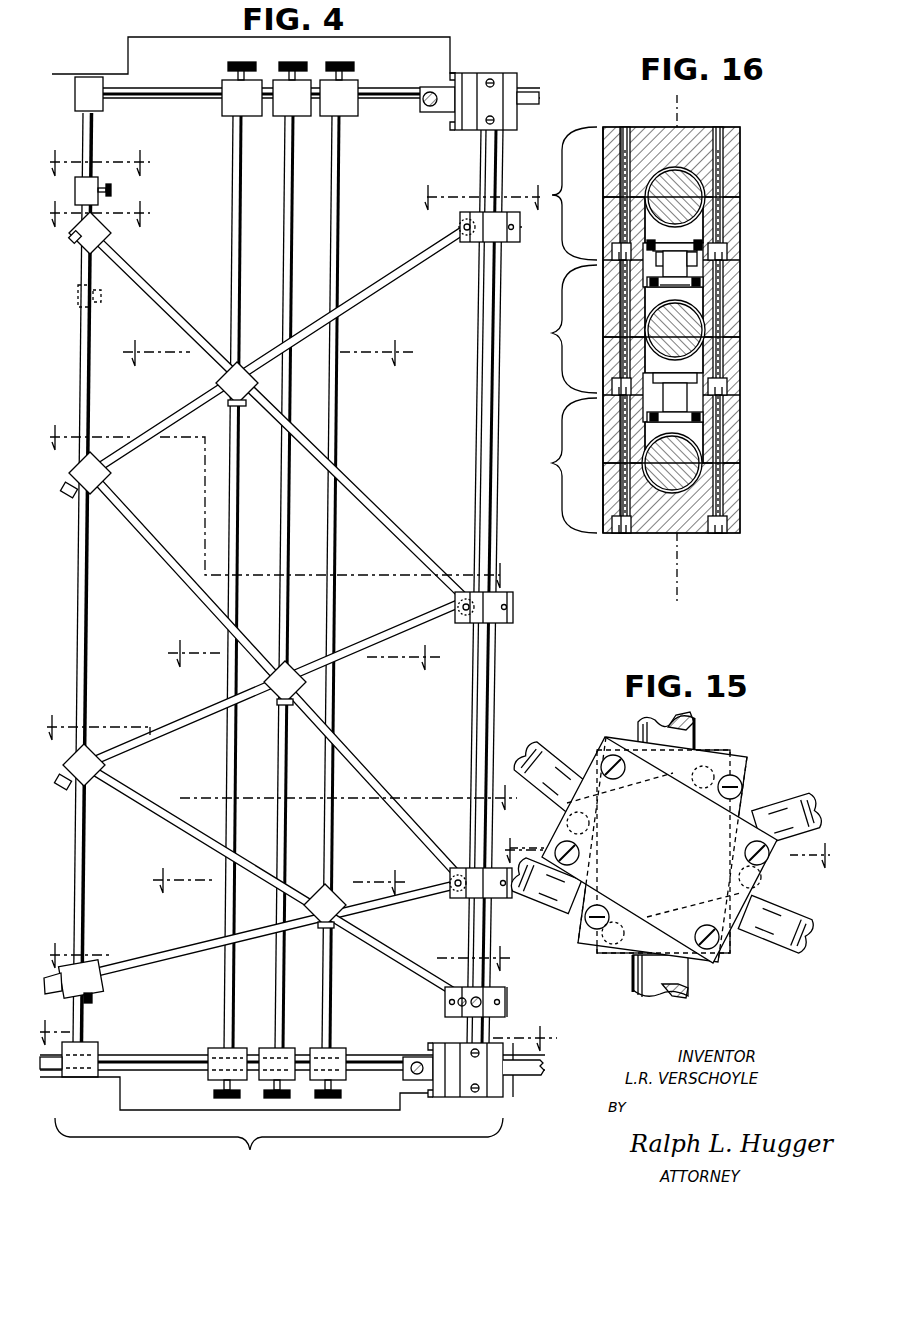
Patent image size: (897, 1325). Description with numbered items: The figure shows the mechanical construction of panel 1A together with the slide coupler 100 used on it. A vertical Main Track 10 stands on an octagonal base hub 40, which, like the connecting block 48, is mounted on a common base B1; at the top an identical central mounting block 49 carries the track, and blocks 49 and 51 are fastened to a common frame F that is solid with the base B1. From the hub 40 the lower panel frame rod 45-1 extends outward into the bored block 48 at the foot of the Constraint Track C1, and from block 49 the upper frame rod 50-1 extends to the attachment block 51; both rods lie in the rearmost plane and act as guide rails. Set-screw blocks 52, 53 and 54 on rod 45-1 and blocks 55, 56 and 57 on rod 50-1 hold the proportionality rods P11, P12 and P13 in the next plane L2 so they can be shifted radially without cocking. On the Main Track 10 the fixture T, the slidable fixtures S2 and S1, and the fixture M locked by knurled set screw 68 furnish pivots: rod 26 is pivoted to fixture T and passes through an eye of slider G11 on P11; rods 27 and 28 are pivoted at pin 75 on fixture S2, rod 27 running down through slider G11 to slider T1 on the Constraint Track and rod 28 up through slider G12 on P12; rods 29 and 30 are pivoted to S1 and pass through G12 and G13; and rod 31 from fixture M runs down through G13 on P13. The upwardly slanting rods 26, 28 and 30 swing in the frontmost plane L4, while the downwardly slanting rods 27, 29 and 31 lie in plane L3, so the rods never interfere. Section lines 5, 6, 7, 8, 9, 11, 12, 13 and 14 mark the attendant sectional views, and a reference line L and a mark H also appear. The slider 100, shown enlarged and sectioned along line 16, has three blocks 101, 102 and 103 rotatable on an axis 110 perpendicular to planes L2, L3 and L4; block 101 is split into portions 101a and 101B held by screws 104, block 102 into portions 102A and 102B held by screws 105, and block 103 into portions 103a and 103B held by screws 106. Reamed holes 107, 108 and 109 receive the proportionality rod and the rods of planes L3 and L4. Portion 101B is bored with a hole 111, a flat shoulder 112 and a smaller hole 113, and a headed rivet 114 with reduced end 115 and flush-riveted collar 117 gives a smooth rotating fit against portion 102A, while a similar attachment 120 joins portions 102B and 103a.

In FIG. 4, the frame F is at (436, 37).
In FIG. 4, the attachment block 51 is at (103, 105).
In FIG. 4, the block 57 is at (250, 118).
In FIG. 4, the block 56 is at (300, 118).
In FIG. 4, the block 55 is at (348, 118).
In FIG. 4, the upper panel frame rod 50-1 is at (385, 92).
In FIG. 4, the central mounting block 49 is at (500, 95).
In FIG. 4, the Constraint Track C1 is at (111, 190).
In FIG. 4, the section line 14 is at (100, 160).
In FIG. 4, the section line 13 is at (100, 211).
In FIG. 4, the section line 12 is at (485, 194).
In FIG. 4, the section line 11 is at (269, 349).
In FIG. 4, the Main Track 10 is at (296, 503).
In FIG. 4, the section line 7 is at (304, 651).
In FIG. 4, the section line 8 is at (282, 757).
In FIG. 4, the section line 9 is at (277, 878).
In FIG. 4, the section line 6 is at (288, 953).
In FIG. 4, the section line 5 is at (298, 1031).
In FIG. 4, the section line 16 is at (525, 845).
In FIG. 15, the section line 16 is at (670, 859).
In FIG. 4, the block 101 is at (535, 226).
In FIG. 16, the block 101 is at (563, 193).
In FIG. 15, the block 101 is at (600, 953).
In FIG. 4, the fixture M is at (507, 242).
In FIG. 4, the set screw 68 is at (466, 236).
In FIG. 4, the rod 31 is at (392, 268).
In FIG. 4, the rod 30 is at (372, 508).
In FIG. 4, the rod 29 is at (396, 630).
In FIG. 4, the rod 28 is at (410, 830).
In FIG. 4, the rod 27 is at (412, 900).
In FIG. 4, the rod 26 is at (388, 960).
In FIG. 4, the proportionality rod P13 is at (238, 276).
In FIG. 4, the proportionality rod P12 is at (291, 272).
In FIG. 4, the proportionality rod P11 is at (347, 274).
In FIG. 15, the proportionality rod P11 is at (685, 745).
In FIG. 4, the slider G13 is at (248, 362).
In FIG. 4, the slider G12 is at (296, 662).
In FIG. 4, the slider G11 is at (342, 875).
In FIG. 4, the hidden clamp H is at (76, 300).
In FIG. 4, the slider S1 is at (505, 623).
In FIG. 4, the slider S2 is at (508, 898).
In FIG. 4, the line L is at (155, 762).
In FIG. 4, the pivot 75 is at (450, 880).
In FIG. 4, the slider T1 is at (93, 1000).
In FIG. 4, the fixture T is at (505, 1008).
In FIG. 4, the connecting block 48 is at (98, 1048).
In FIG. 4, the block 54 is at (238, 1052).
In FIG. 4, the block 53 is at (288, 1052).
In FIG. 4, the block 52 is at (340, 1054).
In FIG. 4, the panel frame rod 45-1 is at (378, 1058).
In FIG. 4, the base hub 40 is at (452, 1093).
In FIG. 4, the base B1 is at (122, 1102).
In FIG. 4, the panel 1A is at (279, 1146).
In FIG. 16, the slider 100 is at (671, 330).
In FIG. 15, the slider 100 is at (666, 854).
In FIG. 16, the axis 110 is at (672, 118).
In FIG. 16, the block portion 101a is at (610, 178).
In FIG. 16, the block portion 101B is at (610, 240).
In FIG. 16, the block portion 102A is at (610, 320).
In FIG. 16, the block portion 102B is at (640, 345).
In FIG. 16, the block portion 103a is at (612, 400).
In FIG. 16, the block portion 103B is at (634, 505).
In FIG. 16, the block 102 is at (556, 329).
In FIG. 15, the block 102 is at (756, 804).
In FIG. 16, the block 103 is at (556, 465).
In FIG. 15, the block 103 is at (684, 861).
In FIG. 16, the screws 104 is at (625, 208).
In FIG. 16, the screws 105 is at (625, 338).
In FIG. 16, the screws 106 is at (620, 455).
In FIG. 16, the hole 107 is at (690, 183).
In FIG. 16, the hole 108 is at (690, 350).
In FIG. 16, the hole 109 is at (665, 495).
In FIG. 16, the hole 111 is at (650, 244).
In FIG. 16, the shoulder 112 is at (657, 258).
In FIG. 16, the hole 113 is at (690, 260).
In FIG. 16, the rivet 114 is at (702, 244).
In FIG. 16, the reduced end portion 115 is at (680, 290).
In FIG. 16, the collar 117 is at (700, 283).
In FIG. 16, the rivet attachment 120 is at (700, 398).
In FIG. 16, the locating plane L2 is at (740, 197).
In FIG. 16, the locating plane L3 is at (740, 337).
In FIG. 16, the locating plane L4 is at (740, 463).